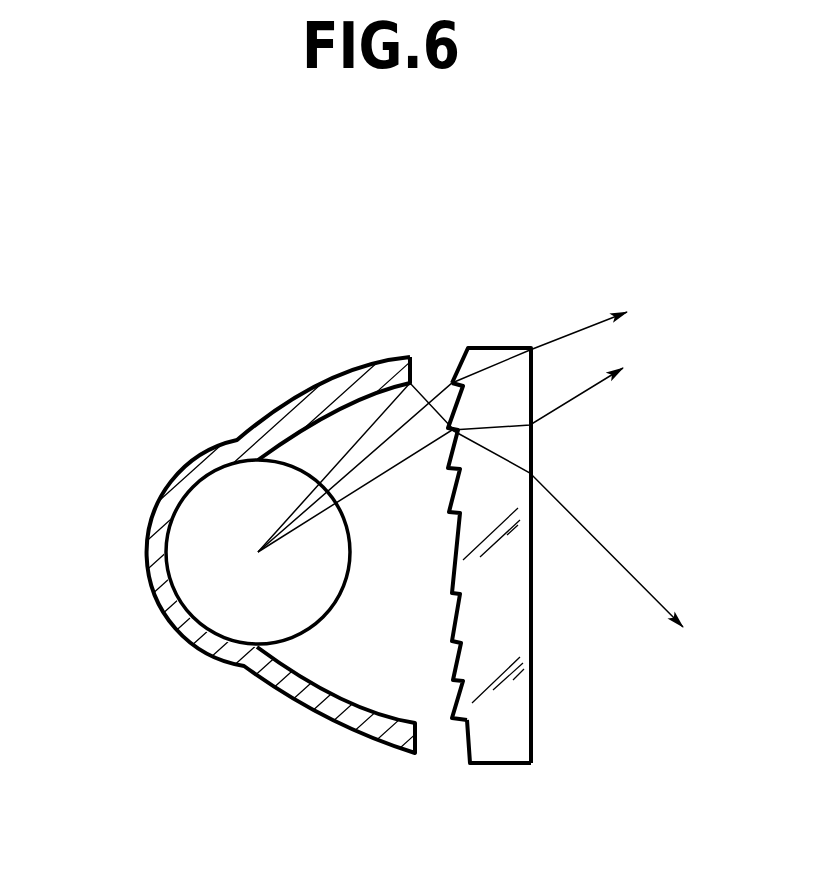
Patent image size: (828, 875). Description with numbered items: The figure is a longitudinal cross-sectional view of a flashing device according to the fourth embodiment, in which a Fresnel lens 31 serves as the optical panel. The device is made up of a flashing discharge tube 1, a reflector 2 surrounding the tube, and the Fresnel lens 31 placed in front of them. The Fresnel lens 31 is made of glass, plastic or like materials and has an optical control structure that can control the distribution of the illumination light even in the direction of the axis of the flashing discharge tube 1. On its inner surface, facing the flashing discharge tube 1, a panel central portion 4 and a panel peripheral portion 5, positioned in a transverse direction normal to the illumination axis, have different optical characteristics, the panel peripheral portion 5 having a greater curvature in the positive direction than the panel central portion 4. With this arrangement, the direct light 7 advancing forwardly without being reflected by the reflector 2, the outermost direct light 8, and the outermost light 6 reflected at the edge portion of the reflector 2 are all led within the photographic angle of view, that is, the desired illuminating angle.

The flashing discharge tube 1 is at (187, 570).
The reflector 2 is at (277, 690).
The panel central portion 4 is at (440, 611).
The panel peripheral portion 5 is at (450, 743).
The Fresnel lens 31 is at (500, 753).
The outermost reflected light 6 is at (635, 577).
The direct light 7 is at (582, 397).
The outermost direct light 8 is at (580, 330).